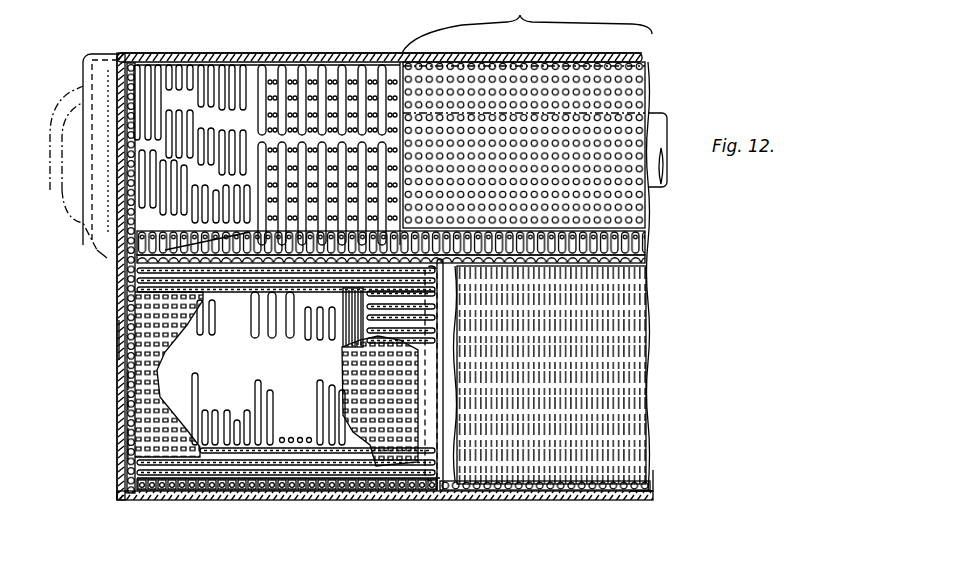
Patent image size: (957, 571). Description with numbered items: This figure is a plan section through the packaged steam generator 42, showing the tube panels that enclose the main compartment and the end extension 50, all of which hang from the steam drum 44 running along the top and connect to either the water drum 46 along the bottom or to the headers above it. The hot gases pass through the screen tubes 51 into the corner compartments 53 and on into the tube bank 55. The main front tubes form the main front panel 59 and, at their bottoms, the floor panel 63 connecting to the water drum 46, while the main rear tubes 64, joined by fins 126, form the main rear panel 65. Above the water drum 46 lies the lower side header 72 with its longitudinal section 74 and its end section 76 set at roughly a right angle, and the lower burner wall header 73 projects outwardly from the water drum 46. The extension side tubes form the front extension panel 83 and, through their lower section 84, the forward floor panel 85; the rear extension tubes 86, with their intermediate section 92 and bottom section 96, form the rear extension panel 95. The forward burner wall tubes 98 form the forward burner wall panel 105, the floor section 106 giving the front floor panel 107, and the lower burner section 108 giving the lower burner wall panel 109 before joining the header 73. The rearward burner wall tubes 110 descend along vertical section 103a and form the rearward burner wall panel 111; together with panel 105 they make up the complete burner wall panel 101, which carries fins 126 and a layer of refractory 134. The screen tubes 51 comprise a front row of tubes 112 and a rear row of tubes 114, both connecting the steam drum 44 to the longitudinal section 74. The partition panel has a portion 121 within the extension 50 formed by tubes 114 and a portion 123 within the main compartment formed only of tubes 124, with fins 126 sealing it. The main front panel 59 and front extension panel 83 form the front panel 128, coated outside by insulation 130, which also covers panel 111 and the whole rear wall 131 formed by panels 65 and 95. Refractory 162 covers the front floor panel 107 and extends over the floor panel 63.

The packaged steam generator 42 is at (179, 53).
The steam drum 44 is at (54, 100).
The water drum 46 is at (670, 126).
The extension 50 is at (272, 367).
The screen tubes 51 is at (205, 230).
The corner compartments 53 is at (205, 112).
The tube bank 55 is at (345, 58).
The main front panel 59 is at (654, 486).
The floor panel 63 is at (650, 373).
The main rear tubes 64 is at (480, 66).
The main rear panel 65 is at (461, 57).
The lower side header 72 is at (97, 258).
The lower burner wall header 73 is at (456, 432).
The longitudinal section 74 is at (266, 316).
The end section 76 is at (80, 54).
The front extension panel 83 is at (280, 502).
The lower section 84 is at (338, 406).
The forward floor panel 85 is at (338, 437).
The rear extension tubes 86 is at (140, 66).
The intermediate section 92 is at (160, 128).
The rear extension panel 95 is at (262, 64).
The bottom section 96 is at (158, 212).
The forward burner wall tubes 98 is at (133, 402).
The burner wall panel 101 is at (127, 436).
The vertical section 103a is at (131, 378).
The forward burner wall panel 105 is at (133, 458).
The floor section 106 is at (190, 342).
The front floor panel 107 is at (199, 402).
The lower burner section 108 is at (441, 408).
The lower burner wall panel 109 is at (445, 380).
The rearward burner wall tubes 110 is at (128, 187).
The rearward burner wall panel 111 is at (367, 60).
The front row of tubes 112 is at (165, 250).
The rear row of tubes 114 is at (82, 300).
The portion of partition panel 121 is at (330, 256).
The portion of partition panel 123 is at (527, 26).
The tubes 124 is at (649, 240).
The fins 126 is at (131, 66).
The front panel 128 is at (440, 500).
The insulation 130 is at (211, 56).
The rear wall 131 is at (301, 60).
The refractory 134 is at (119, 340).
The refractory 162 is at (172, 352).